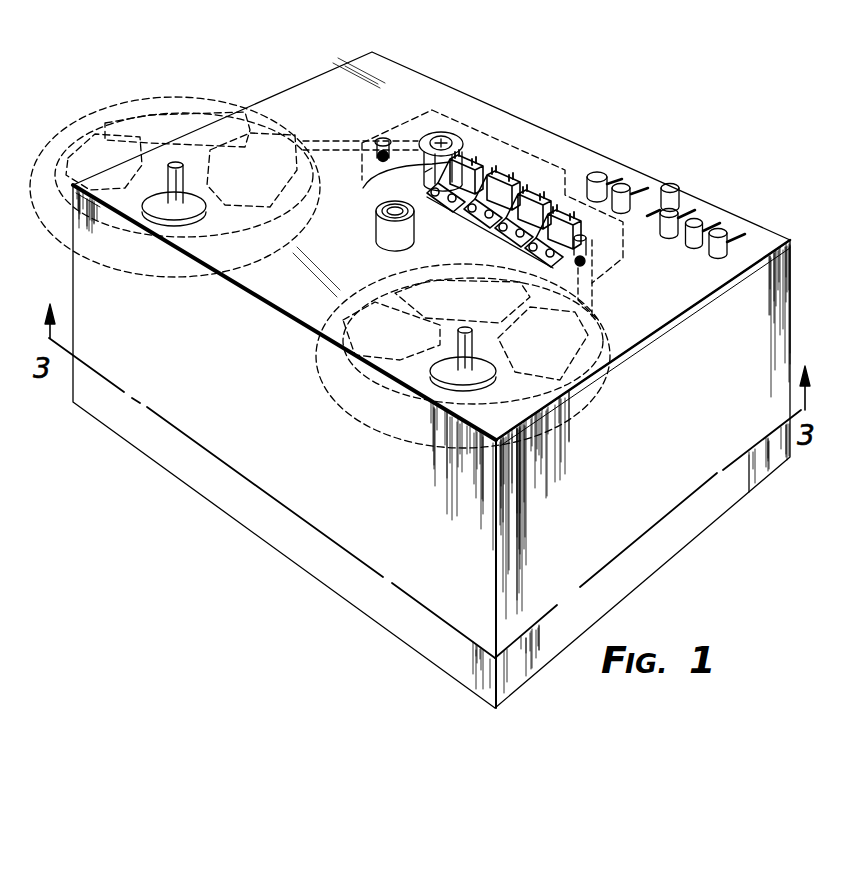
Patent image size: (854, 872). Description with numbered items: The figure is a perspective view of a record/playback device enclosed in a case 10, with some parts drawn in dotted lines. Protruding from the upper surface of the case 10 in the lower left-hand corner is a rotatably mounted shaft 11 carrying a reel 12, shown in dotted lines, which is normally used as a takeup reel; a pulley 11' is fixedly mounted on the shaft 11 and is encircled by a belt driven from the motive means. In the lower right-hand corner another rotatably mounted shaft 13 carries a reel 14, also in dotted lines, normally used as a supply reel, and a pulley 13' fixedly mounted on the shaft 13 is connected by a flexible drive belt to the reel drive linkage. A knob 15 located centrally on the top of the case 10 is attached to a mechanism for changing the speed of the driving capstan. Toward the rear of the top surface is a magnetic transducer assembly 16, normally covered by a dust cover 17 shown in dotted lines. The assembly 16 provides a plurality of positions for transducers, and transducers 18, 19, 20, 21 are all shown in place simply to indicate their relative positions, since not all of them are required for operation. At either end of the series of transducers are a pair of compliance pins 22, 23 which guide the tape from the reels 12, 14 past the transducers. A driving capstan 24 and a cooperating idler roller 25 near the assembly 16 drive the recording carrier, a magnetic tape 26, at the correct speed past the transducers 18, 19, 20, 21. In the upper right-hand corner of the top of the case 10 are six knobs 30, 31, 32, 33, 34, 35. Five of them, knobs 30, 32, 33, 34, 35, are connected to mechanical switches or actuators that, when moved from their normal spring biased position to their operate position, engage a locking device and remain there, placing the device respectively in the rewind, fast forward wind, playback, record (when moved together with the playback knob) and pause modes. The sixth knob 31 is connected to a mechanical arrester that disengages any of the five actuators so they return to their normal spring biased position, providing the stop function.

The case 10 is at (388, 58).
The shaft 11 is at (166, 160).
The pulley 11' is at (194, 227).
The reel 12 is at (207, 98).
The shaft 13 is at (429, 348).
The pulley 13' is at (453, 398).
The reel 14 is at (363, 432).
The knob 15 is at (377, 230).
The magnetic transducer assembly 16 is at (471, 221).
The dust cover 17 is at (487, 130).
The transducer 18 is at (530, 254).
The transducer 19 is at (494, 232).
The transducer 20 is at (490, 236).
The transducer 21 is at (426, 171).
The compliance pin 22 is at (585, 251).
The compliance pin 23 is at (382, 137).
The driving capstan 24 is at (392, 186).
The idler roller 25 is at (428, 138).
The magnetic tape 26 is at (322, 132).
The knob 30 is at (716, 254).
The knob 31 is at (690, 244).
The knob 32 is at (668, 232).
The knob 33 is at (672, 185).
The knob 34 is at (626, 185).
The knob 35 is at (598, 173).